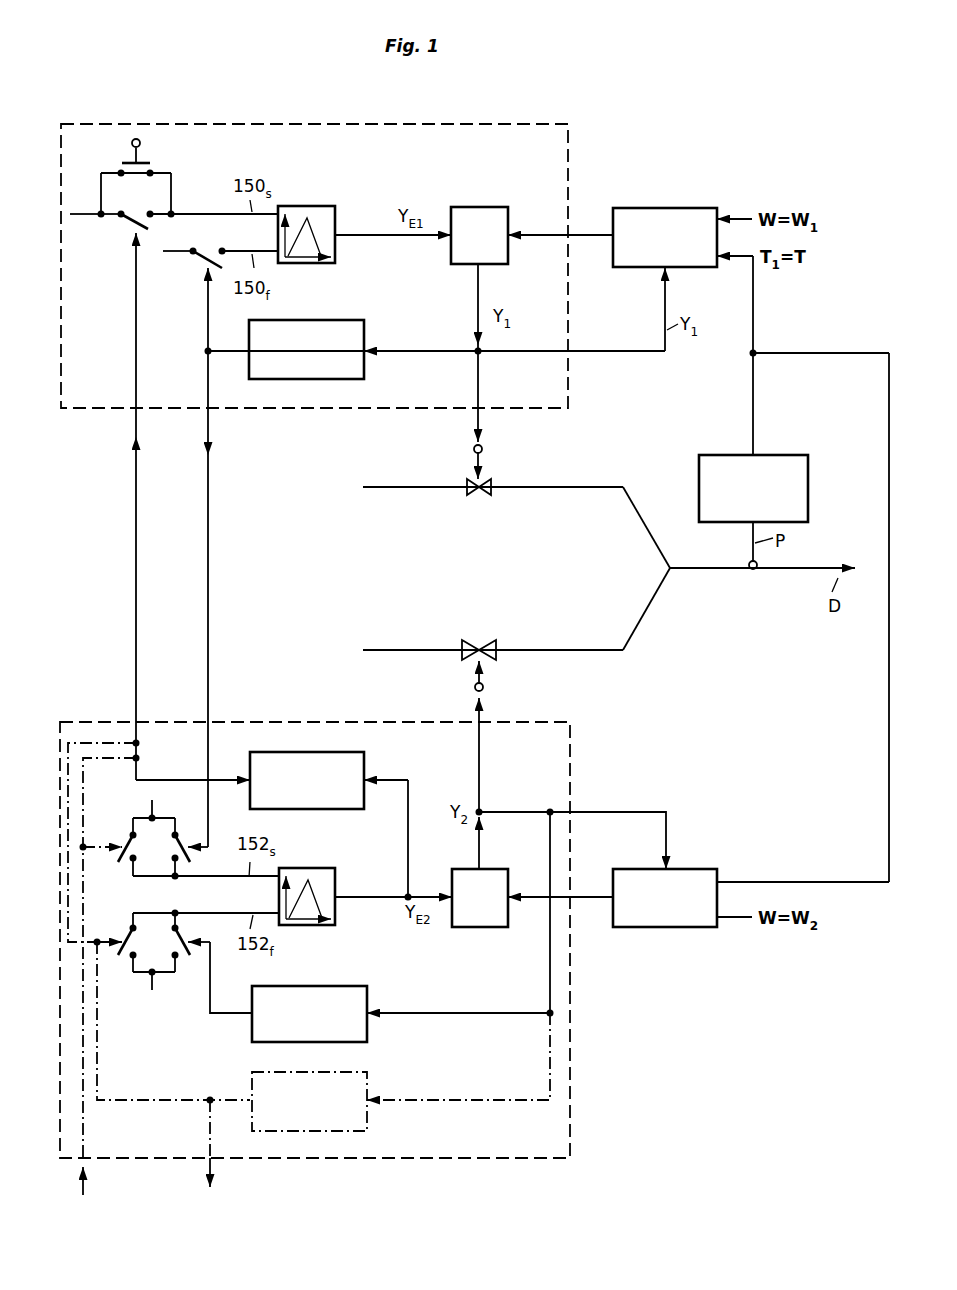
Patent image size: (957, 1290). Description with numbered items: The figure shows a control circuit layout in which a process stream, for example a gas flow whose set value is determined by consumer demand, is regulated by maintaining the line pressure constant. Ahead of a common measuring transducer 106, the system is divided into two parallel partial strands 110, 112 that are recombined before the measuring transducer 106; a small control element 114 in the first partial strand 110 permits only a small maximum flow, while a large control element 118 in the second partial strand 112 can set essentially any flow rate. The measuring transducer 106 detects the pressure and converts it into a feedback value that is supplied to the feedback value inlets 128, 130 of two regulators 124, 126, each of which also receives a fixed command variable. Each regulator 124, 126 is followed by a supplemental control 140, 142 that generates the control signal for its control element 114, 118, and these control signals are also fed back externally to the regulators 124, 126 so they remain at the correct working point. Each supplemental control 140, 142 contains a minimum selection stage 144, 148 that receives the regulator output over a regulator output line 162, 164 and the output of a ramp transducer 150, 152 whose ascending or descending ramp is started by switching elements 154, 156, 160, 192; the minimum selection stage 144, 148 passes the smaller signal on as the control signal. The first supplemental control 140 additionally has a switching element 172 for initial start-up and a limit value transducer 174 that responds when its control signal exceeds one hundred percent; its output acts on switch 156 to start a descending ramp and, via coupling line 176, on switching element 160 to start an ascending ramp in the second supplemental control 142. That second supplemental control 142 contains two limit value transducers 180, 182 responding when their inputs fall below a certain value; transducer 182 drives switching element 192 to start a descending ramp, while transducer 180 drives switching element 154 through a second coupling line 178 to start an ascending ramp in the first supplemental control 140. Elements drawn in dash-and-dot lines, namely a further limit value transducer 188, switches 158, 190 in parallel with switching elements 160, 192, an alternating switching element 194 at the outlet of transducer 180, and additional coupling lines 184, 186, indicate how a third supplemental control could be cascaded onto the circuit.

The measuring transducer 106 is at (810, 483).
The first partial strand 110 is at (516, 514).
The second partial strand 112 is at (516, 609).
The first control element 114 is at (473, 497).
The second control element 118 is at (472, 638).
The regulator 124 is at (668, 207).
The regulator 126 is at (668, 930).
The feedback value inlet 128 is at (755, 313).
The feedback value inlet 130 is at (803, 617).
The first supplemental control 140 is at (566, 157).
The second supplemental control 142 is at (566, 1150).
The minimum selection stage 144 is at (481, 207).
The minimum selection stage 148 is at (479, 928).
The ramp transducer 150 is at (336, 212).
The ramp transducer 152 is at (337, 879).
The switching element 154 is at (128, 223).
The switching element 156 is at (202, 257).
The switch 158 is at (127, 835).
The switching element 160 is at (183, 830).
The first regulator output line 162 is at (587, 238).
The second regulator output line 164 is at (590, 900).
The switching element 172 is at (150, 163).
The limit value transducer 174 is at (366, 331).
The coupling line 176 is at (206, 470).
The second coupling line 178 is at (134, 468).
The limit value transducer 180 is at (366, 763).
The limit value transducer 182 is at (300, 985).
The coupling line 184 is at (216, 1161).
The coupling line 186 is at (89, 1195).
The limit value transducer 188 is at (370, 1080).
The switch 190 is at (120, 960).
The switching element 192 is at (190, 960).
The switching element 194 is at (140, 752).